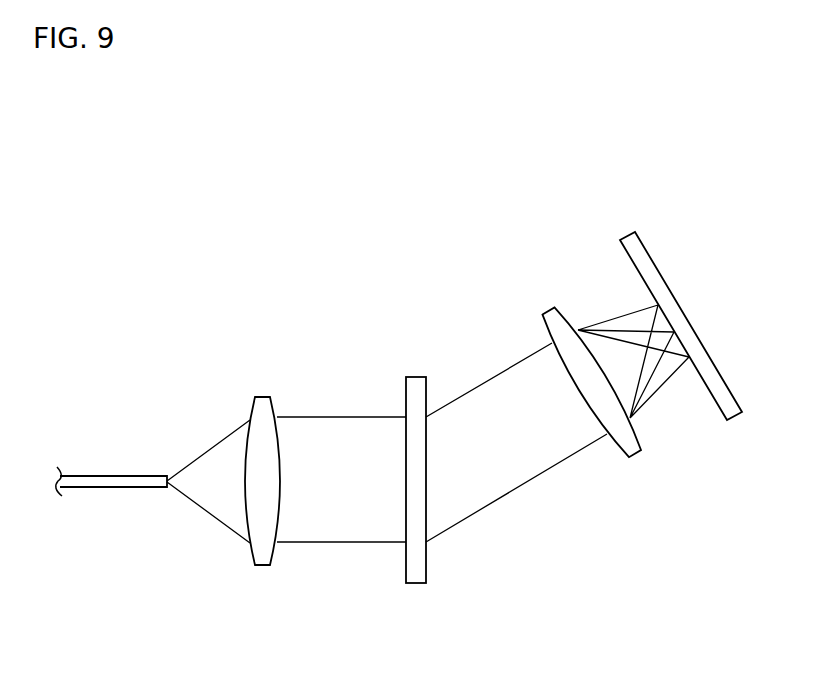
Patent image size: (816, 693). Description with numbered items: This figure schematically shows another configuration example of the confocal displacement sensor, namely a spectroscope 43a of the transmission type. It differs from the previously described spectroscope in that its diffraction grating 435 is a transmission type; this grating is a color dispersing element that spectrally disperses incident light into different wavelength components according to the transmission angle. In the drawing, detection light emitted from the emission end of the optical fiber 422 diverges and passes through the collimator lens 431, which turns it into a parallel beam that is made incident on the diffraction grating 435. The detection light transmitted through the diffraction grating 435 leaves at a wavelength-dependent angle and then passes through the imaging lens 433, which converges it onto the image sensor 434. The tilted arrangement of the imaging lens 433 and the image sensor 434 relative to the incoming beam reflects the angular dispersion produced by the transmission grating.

The spectroscope 43a is at (596, 133).
The optical fiber 422 is at (115, 476).
The collimator lens 431 is at (259, 396).
The diffraction grating 435 is at (415, 377).
The imaging lens 433 is at (548, 308).
The image sensor 434 is at (651, 254).